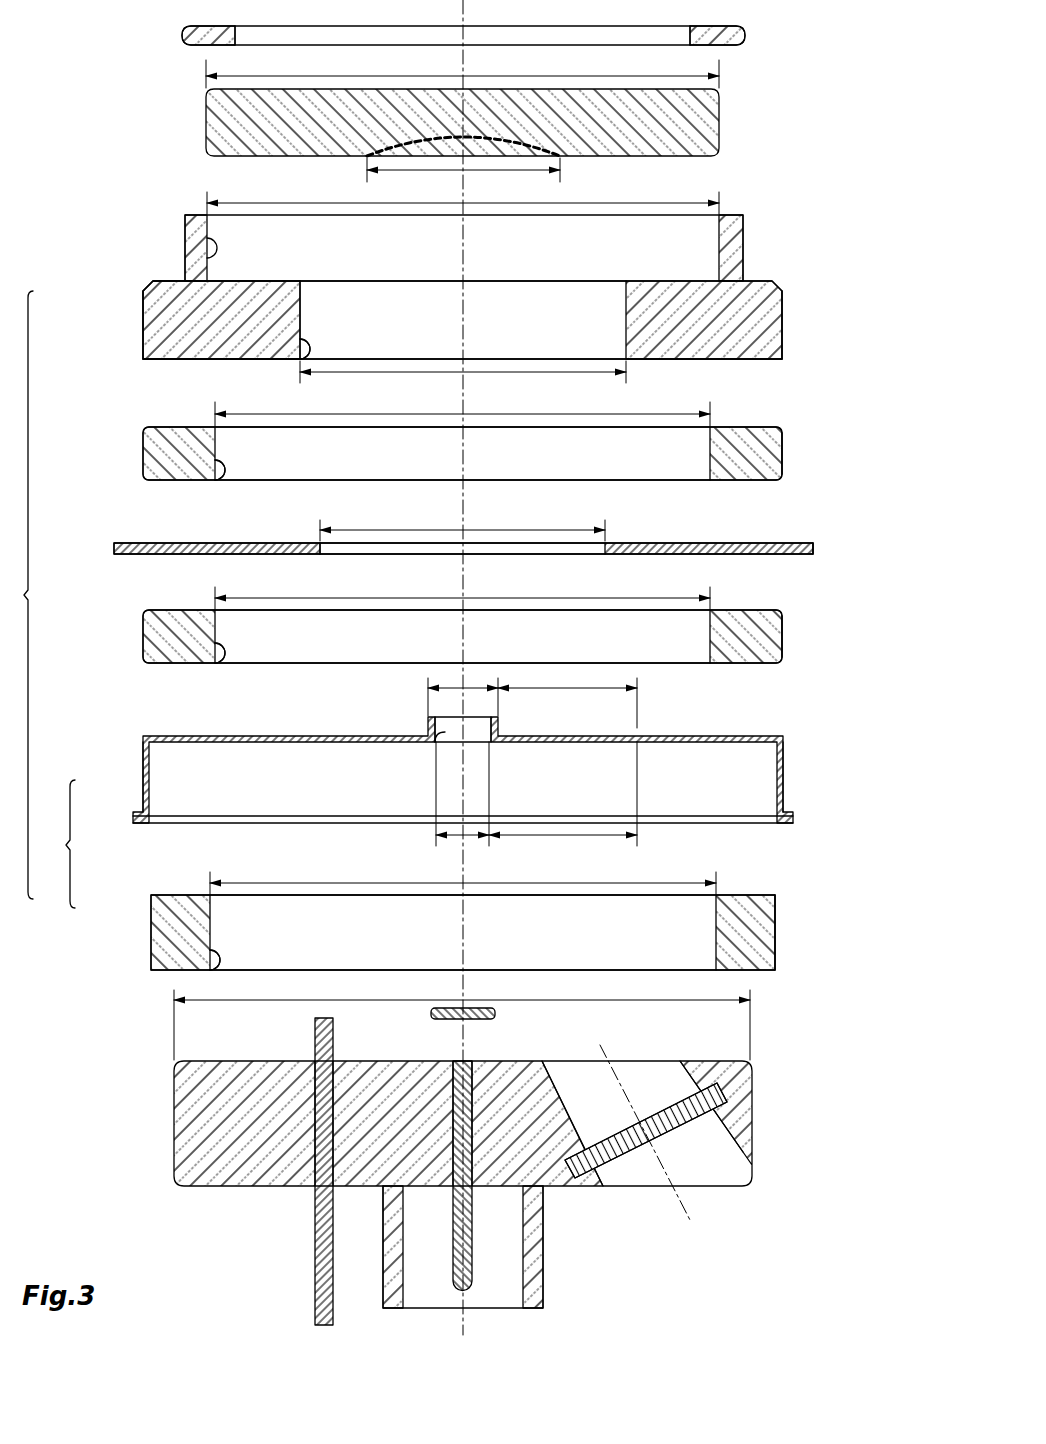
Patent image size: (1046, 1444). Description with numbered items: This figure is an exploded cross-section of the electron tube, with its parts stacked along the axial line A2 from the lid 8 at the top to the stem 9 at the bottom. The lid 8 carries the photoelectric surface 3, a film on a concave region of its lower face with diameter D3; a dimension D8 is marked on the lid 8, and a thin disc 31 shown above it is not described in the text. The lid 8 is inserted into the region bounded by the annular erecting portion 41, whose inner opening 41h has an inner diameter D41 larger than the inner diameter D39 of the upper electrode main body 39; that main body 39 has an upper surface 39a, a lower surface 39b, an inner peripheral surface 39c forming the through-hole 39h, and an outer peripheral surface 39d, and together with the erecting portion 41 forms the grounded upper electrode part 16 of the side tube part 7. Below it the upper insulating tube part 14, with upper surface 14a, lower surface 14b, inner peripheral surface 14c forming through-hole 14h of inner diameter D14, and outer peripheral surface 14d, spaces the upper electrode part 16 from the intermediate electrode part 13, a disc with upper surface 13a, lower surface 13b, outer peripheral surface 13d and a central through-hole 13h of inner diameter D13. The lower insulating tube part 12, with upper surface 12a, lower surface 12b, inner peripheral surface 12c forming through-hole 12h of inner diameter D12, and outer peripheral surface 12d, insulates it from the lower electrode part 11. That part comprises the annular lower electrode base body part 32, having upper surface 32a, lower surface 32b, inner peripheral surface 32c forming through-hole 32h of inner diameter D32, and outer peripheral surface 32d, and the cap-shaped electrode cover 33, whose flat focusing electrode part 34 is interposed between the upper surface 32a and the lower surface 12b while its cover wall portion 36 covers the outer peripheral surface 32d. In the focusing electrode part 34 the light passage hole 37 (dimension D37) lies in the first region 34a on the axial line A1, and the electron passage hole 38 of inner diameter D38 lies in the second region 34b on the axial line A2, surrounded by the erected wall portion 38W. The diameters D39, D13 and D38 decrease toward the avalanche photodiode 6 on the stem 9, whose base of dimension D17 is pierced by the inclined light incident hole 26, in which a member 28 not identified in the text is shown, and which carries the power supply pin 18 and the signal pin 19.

The photoelectric surface 3 is at (383, 150).
The avalanche photodiode 6 is at (431, 1013).
The side tube part 7 is at (18, 595).
The lid 8 is at (206, 125).
The stem 9 is at (174, 1118).
The lower electrode part 11 is at (51, 844).
The lower insulating tube part 12 is at (140, 635).
The upper surface 12a is at (760, 610).
The lower surface 12b is at (755, 663).
The inner peripheral surface 12c is at (215, 655).
The outer peripheral surface 12d is at (782, 640).
The through-hole 12h is at (220, 653).
The intermediate electrode part 13 is at (112, 548).
The upper surface 13a is at (800, 543).
The lower surface 13b is at (720, 554).
The outer peripheral surface 13d is at (813, 549).
The through-hole 13h is at (322, 549).
The upper insulating tube part 14 is at (140, 455).
The upper surface 14a is at (765, 427).
The lower surface 14b is at (760, 480).
The inner peripheral surface 14c is at (215, 472).
The outer peripheral surface 14d is at (782, 450).
The through-hole 14h is at (220, 470).
The upper electrode part 16 is at (140, 322).
The power supply pin 18 is at (315, 1262).
The signal pin 19 is at (453, 1252).
The light incident hole 26 is at (662, 1078).
The inclined plate 28 is at (637, 1168).
The cover plate 31 is at (182, 38).
The lower electrode base body part 32 is at (148, 930).
The upper surface 32a is at (750, 895).
The lower surface 32b is at (750, 970).
The inner peripheral surface 32c is at (210, 962).
The outer peripheral surface 32d is at (775, 930).
The through-hole 32h is at (215, 960).
The electrode cover 33 is at (467, 771).
The focusing electrode part 34 is at (783, 740).
The first region 34a is at (625, 690).
The second region 34b is at (428, 688).
The cover wall portion 36 is at (783, 785).
The light passage hole 37 is at (637, 725).
The electron passage hole 38 is at (498, 718).
The wall portion 38W is at (437, 742).
The upper electrode main body 39 is at (878, 247).
The upper surface 39a is at (770, 290).
The lower surface 39b is at (755, 359).
The inner peripheral surface 39c is at (300, 352).
The outer peripheral surface 39d is at (782, 322).
The through-hole 39h is at (305, 349).
The erecting portion 41 is at (743, 240).
The hole of ring 41 41h is at (207, 248).
The axial line A1 is at (687, 1205).
The axial line A2 is at (462, 12).
The diameter D3 is at (463, 178).
The holder diameter D8 is at (462, 68).
The inner diameter D12 is at (462, 589).
The inner diameter D13 is at (462, 520).
The inner diameter D14 is at (462, 406).
The base diameter D17 is at (462, 1015).
The inner diameter D32 is at (463, 874).
The step diameter D37 is at (563, 850).
The inner diameter D38 is at (436, 838).
The inner diameter D39 is at (463, 382).
The inner diameter D41 is at (463, 194).